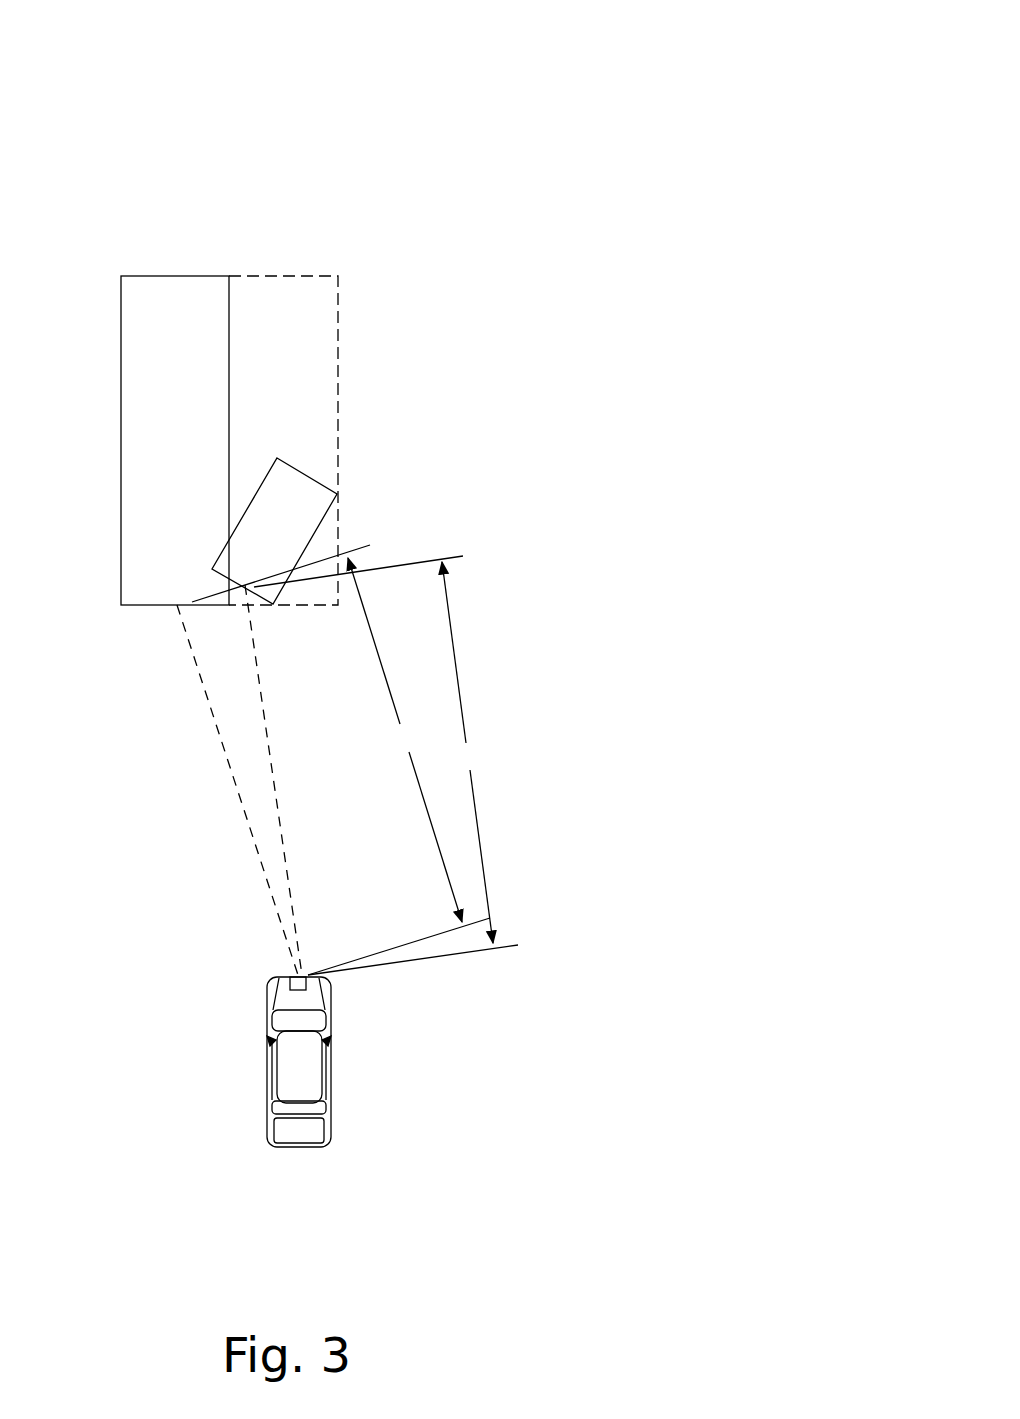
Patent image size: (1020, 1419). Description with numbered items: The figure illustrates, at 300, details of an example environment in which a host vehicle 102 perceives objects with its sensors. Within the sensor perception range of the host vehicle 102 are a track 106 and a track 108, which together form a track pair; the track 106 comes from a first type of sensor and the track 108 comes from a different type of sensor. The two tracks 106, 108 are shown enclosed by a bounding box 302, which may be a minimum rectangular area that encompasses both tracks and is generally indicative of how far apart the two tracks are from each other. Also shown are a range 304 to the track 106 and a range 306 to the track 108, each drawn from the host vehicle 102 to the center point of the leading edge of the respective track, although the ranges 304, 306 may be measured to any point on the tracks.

The details of the example environment 300 is at (628, 55).
The host vehicle 102 is at (275, 977).
The track 106 is at (151, 440).
The track 108 is at (290, 517).
The bounding box 302 is at (338, 276).
The range 304 is at (405, 740).
The range 306 is at (467, 752).